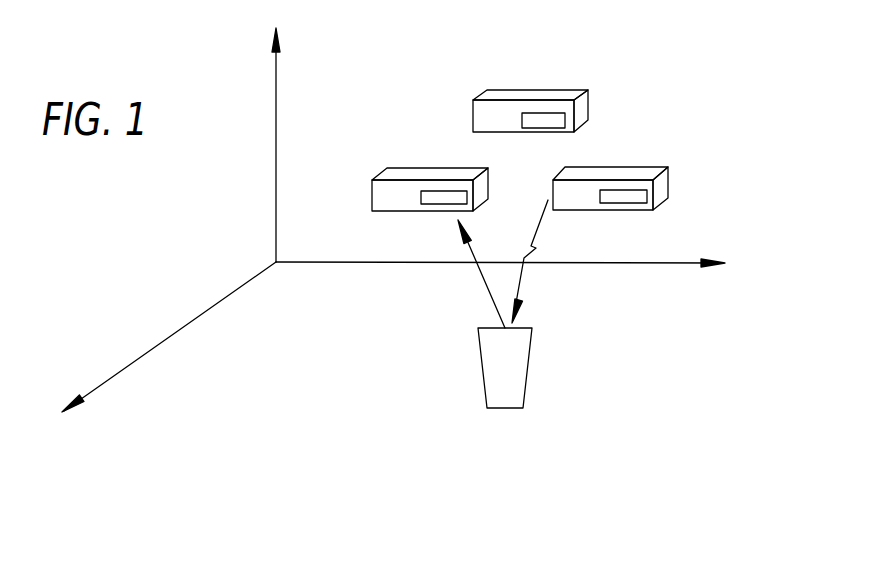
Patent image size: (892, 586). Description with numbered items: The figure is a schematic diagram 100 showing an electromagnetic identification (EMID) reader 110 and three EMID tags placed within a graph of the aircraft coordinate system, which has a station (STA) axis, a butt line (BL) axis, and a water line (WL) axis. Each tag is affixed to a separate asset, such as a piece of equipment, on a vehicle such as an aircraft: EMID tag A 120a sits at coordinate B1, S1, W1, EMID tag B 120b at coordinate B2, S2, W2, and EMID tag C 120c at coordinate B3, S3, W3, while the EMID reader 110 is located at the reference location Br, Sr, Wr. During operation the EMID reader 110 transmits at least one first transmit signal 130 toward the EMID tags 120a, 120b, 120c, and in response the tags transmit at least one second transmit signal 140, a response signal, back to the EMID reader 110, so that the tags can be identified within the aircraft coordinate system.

The schematic diagram 100 is at (754, 452).
The EMID reader 110 is at (507, 368).
The EMID tag A 120a is at (494, 97).
The EMID tag B 120b is at (383, 193).
The EMID tag C 120c is at (660, 190).
The first transmit signal 130 is at (484, 282).
The second transmit signal 140 is at (526, 278).